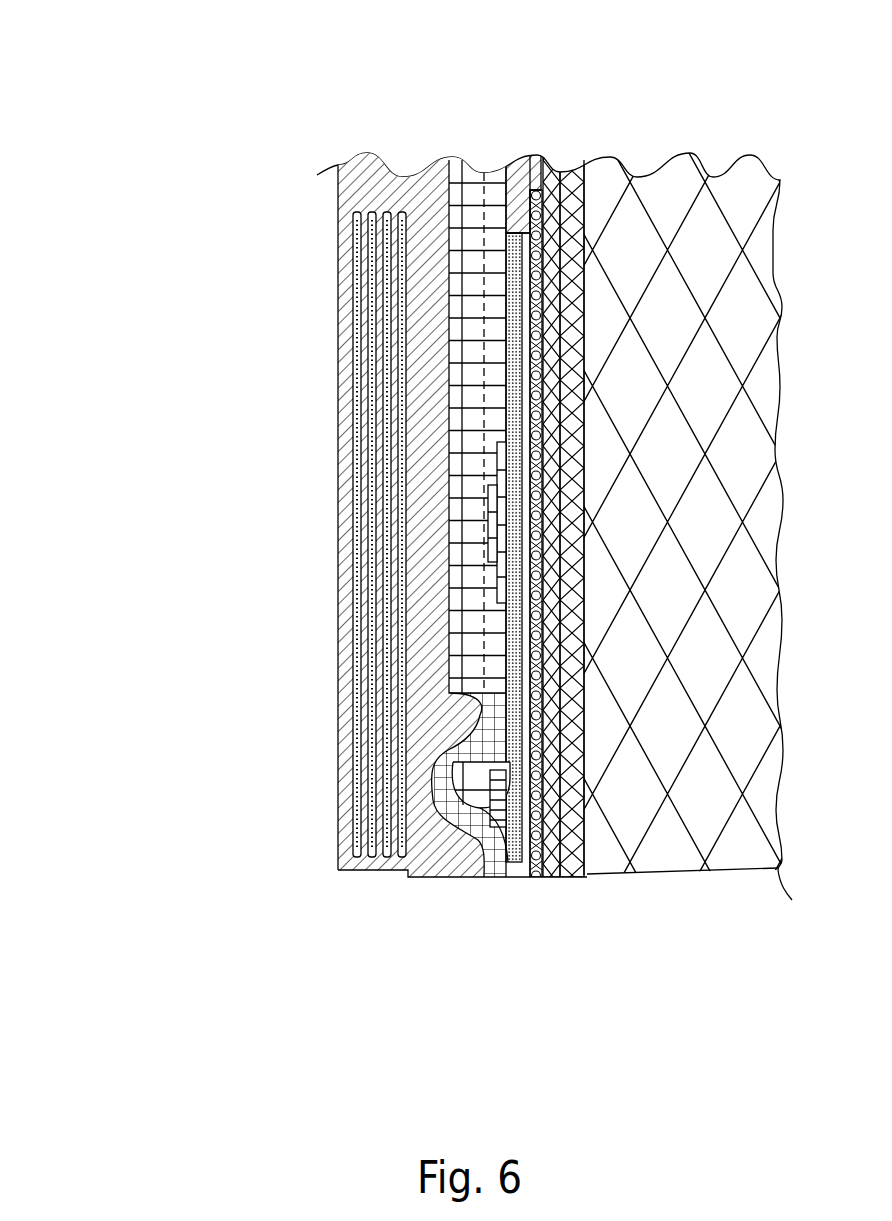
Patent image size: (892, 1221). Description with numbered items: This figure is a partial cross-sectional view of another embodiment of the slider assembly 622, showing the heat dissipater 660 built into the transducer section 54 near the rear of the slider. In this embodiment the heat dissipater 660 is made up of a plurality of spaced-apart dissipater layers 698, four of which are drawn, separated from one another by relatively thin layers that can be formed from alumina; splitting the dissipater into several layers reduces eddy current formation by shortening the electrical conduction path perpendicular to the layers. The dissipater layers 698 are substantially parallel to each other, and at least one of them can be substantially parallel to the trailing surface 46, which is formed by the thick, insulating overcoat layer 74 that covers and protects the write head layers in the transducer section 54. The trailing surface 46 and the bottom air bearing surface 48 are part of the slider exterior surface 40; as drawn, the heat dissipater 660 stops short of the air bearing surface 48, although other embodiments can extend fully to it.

The slider assembly 622 is at (205, 265).
The dissipater layers 698 is at (402, 177).
The overcoat layer 74 is at (338, 440).
The heat dissipater 660 is at (330, 608).
The trailing surface 46 is at (338, 730).
The slider exterior surface 40 is at (338, 873).
The transducer section 54 is at (590, 877).
The air bearing surface 48 is at (643, 873).